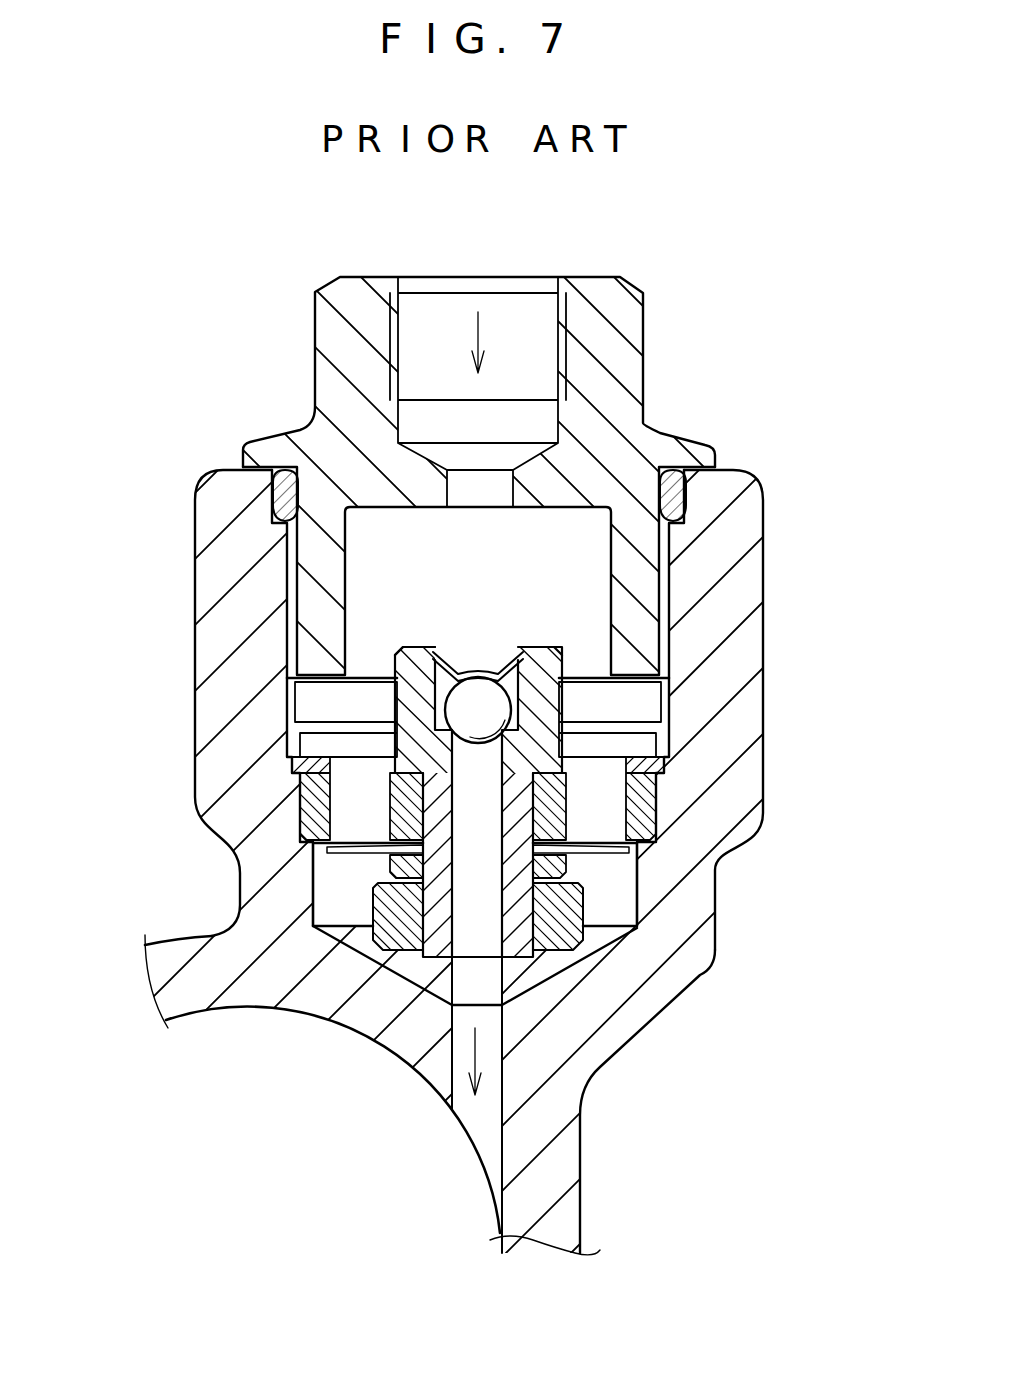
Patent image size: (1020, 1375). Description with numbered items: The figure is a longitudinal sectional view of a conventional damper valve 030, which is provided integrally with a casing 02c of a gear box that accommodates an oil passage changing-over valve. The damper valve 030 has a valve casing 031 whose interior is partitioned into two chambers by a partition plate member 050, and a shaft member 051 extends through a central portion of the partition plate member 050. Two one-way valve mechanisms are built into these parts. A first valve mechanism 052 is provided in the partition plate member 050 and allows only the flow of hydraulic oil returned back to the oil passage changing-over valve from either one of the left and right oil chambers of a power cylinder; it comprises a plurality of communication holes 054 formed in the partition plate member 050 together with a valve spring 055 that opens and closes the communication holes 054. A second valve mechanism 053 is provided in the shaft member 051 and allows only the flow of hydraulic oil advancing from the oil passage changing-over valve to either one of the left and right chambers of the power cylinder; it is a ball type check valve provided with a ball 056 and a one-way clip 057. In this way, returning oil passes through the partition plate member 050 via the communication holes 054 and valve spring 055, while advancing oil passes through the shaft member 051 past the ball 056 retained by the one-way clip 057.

The damper valve 030 is at (764, 342).
The valve casing 031 is at (784, 566).
The casing 02c is at (570, 1174).
The partition plate member 050 is at (638, 798).
The shaft member 051 is at (420, 710).
The first valve mechanism 052 is at (351, 889).
The second valve mechanism 053 is at (457, 648).
The communication holes 054 is at (343, 806).
The valve spring 055 is at (313, 873).
The ball 056 is at (493, 705).
The one-way clip 057 is at (505, 665).